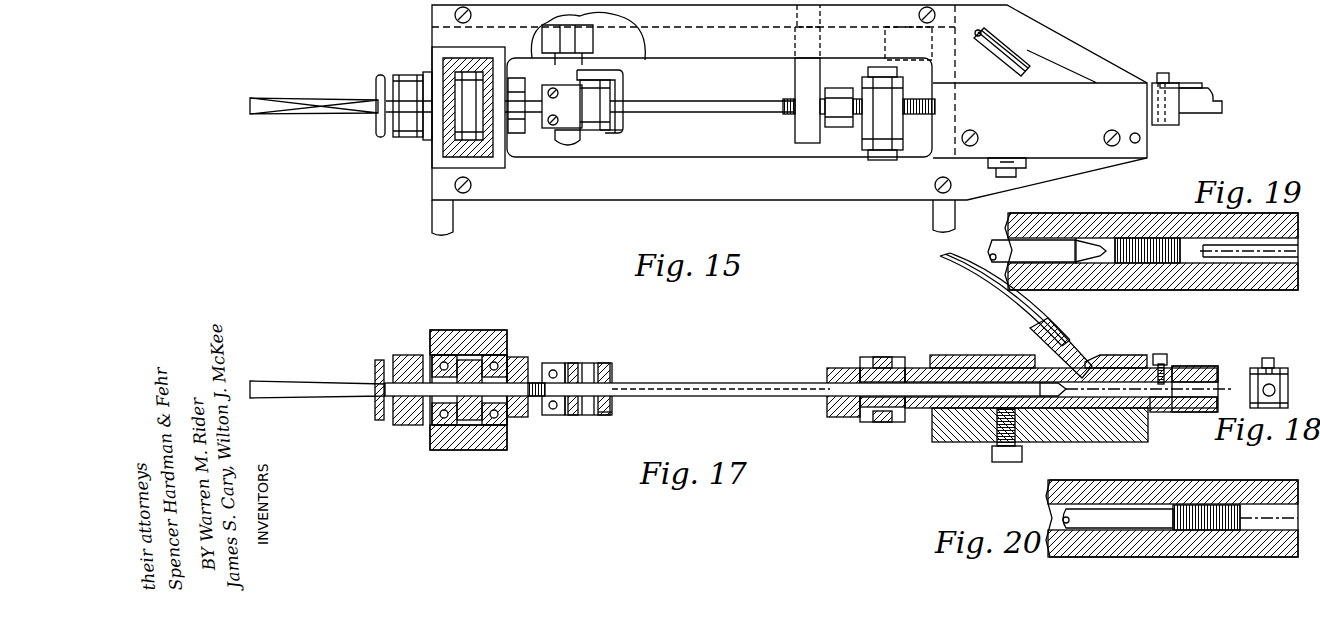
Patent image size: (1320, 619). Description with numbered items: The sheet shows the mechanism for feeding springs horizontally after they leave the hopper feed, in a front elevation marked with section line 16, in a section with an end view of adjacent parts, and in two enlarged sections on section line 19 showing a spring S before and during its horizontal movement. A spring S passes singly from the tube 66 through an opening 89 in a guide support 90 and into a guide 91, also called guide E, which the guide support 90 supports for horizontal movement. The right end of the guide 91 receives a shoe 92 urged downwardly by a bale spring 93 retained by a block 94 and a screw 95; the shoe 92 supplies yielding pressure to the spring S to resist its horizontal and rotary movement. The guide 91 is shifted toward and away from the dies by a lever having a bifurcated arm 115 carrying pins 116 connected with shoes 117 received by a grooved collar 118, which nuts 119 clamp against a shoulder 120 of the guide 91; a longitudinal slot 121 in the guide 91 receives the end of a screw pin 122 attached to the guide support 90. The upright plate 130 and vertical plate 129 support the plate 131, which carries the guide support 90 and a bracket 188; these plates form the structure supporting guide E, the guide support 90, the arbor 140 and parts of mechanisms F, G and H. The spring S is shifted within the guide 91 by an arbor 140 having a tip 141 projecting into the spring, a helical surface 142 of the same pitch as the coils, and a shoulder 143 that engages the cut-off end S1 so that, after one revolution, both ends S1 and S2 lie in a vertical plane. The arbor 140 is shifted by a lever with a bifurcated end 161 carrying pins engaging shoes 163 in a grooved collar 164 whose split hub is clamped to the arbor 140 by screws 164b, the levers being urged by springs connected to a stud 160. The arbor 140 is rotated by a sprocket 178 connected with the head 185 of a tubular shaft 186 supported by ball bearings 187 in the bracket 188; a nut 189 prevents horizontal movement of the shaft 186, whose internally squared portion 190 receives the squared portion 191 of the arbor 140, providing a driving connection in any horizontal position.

In FIG. 15, the section line 16 is at (393, 12).
In FIG. 17, the section line 19 is at (975, 381).
In FIG. 15, the tube 66 is at (992, 40).
In FIG. 17, the tube 66 is at (958, 290).
In FIG. 17, the opening 89 is at (1058, 355).
In FIG. 15, the guide support 90 is at (1067, 147).
In FIG. 17, the guide support 90 is at (1108, 366).
In FIG. 15, the guide 91 is at (923, 125).
In FIG. 17, the guide 91 is at (922, 409).
In FIG. 18, the guide 91 is at (1288, 394).
In FIG. 15, the shoe 92 is at (1208, 88).
In FIG. 17, the shoe 92 is at (1213, 367).
In FIG. 18, the shoe 92 is at (1275, 392).
In FIG. 19, the shoe 92 is at (1258, 263).
In FIG. 20, the shoe 92 is at (1262, 504).
In FIG. 15, the bale spring 93 is at (1180, 83).
In FIG. 17, the bale spring 93 is at (1198, 366).
In FIG. 18, the bale spring 93 is at (1288, 378).
In FIG. 17, the block 94 is at (1166, 370).
In FIG. 18, the block 94 is at (1273, 366).
In FIG. 15, the screw 95 is at (1162, 73).
In FIG. 17, the screw 95 is at (1161, 354).
In FIG. 18, the screw 95 is at (1270, 358).
In FIG. 15, the bifurcated arm 115 is at (872, 66).
In FIG. 15, the pins 116 is at (885, 62).
In FIG. 15, the shoes 117 is at (870, 150).
In FIG. 17, the shoes 117 is at (873, 422).
In FIG. 15, the grooved collar 118 is at (866, 132).
In FIG. 17, the grooved collar 118 is at (898, 412).
In FIG. 15, the nuts 119 is at (822, 118).
In FIG. 17, the nuts 119 is at (840, 368).
In FIG. 17, the shoulder 120 is at (912, 370).
In FIG. 17, the longitudinal slot 121 is at (950, 405).
In FIG. 15, the screw pin 122 is at (999, 178).
In FIG. 17, the screw pin 122 is at (1003, 446).
In FIG. 15, the vertical plate 129 is at (432, 222).
In FIG. 15, the upright plate 130 is at (933, 222).
In FIG. 15, the plate 131 is at (711, 198).
In FIG. 15, the arbor 140 is at (252, 107).
In FIG. 17, the arbor 140 is at (758, 383).
In FIG. 19, the tip 141 is at (1101, 246).
In FIG. 19, the helical surface 142 is at (1072, 249).
In FIG. 19, the shoulder 143 is at (1077, 263).
In FIG. 15, the stud 160 is at (617, 35).
In FIG. 15, the bifurcated end 161 is at (598, 73).
In FIG. 15, the shoes 163 is at (612, 87).
In FIG. 17, the shoes 163 is at (604, 365).
In FIG. 15, the grooved collar 164 is at (609, 134).
In FIG. 17, the grooved collar 164 is at (612, 415).
In FIG. 15, the screws 164b is at (553, 85).
In FIG. 17, the screws 164b is at (554, 368).
In FIG. 15, the sprocket 178 is at (378, 76).
In FIG. 17, the sprocket 178 is at (378, 420).
In FIG. 15, the head 185 is at (412, 139).
In FIG. 17, the head 185 is at (393, 360).
In FIG. 17, the tubular shaft 186 is at (472, 412).
In FIG. 15, the ball bearings 187 is at (460, 58).
In FIG. 17, the ball bearings 187 is at (442, 355).
In FIG. 15, the bracket 188 is at (432, 56).
In FIG. 17, the bracket 188 is at (470, 330).
In FIG. 17, the nut 189 is at (521, 357).
In FIG. 17, the internally squared portion 190 is at (462, 368).
In FIG. 17, the squared portion 191 is at (315, 383).
In FIG. 15, the guide E is at (1220, 105).
In FIG. 17, the guide E is at (1189, 434).
In FIG. 17, the mechanism F is at (905, 370).
In FIG. 15, the mechanism G is at (626, 134).
In FIG. 17, the mechanism G is at (606, 416).
In FIG. 15, the mechanism H is at (377, 133).
In FIG. 17, the mechanism H is at (400, 355).
In FIG. 19, the spring S is at (1160, 238).
In FIG. 20, the spring S is at (1216, 530).
In FIG. 19, the cut-off end S1 is at (1113, 246).
In FIG. 20, the cut-off end S1 is at (1173, 519).
In FIG. 19, the right end S2 is at (1179, 240).
In FIG. 20, the right end S2 is at (1240, 505).